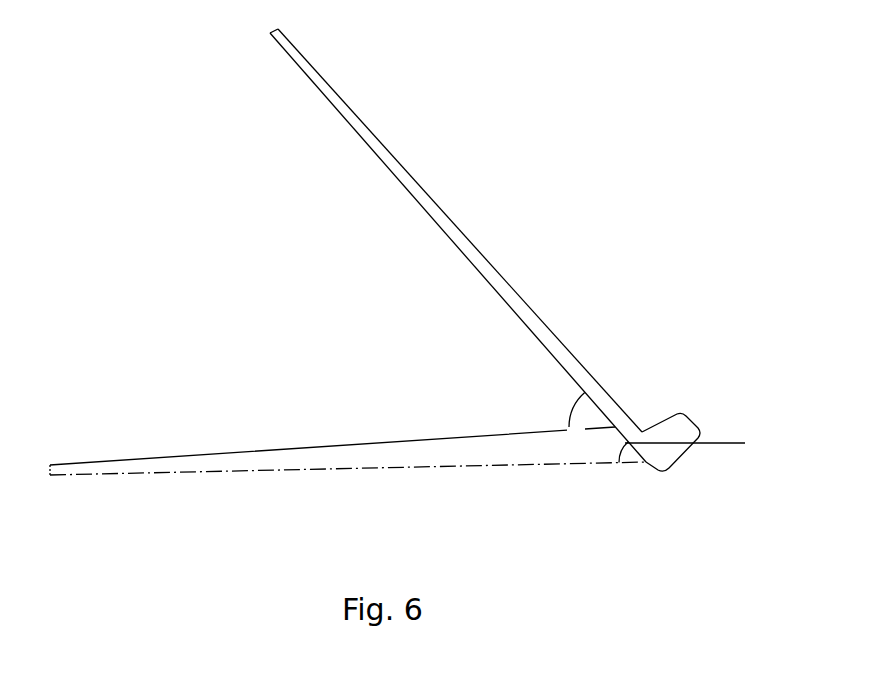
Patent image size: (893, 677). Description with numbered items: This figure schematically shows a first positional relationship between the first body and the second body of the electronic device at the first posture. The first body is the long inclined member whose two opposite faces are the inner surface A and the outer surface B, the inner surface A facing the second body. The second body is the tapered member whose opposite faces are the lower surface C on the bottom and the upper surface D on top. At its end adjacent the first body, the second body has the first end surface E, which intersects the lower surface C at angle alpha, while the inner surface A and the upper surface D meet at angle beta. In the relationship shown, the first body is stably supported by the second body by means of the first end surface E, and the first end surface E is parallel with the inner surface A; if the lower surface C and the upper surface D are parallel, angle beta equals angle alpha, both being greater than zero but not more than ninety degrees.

The A surface A is at (507, 302).
The B surface B is at (437, 205).
The C surface C is at (332, 468).
The D surface D is at (227, 452).
The first end surface E is at (694, 445).